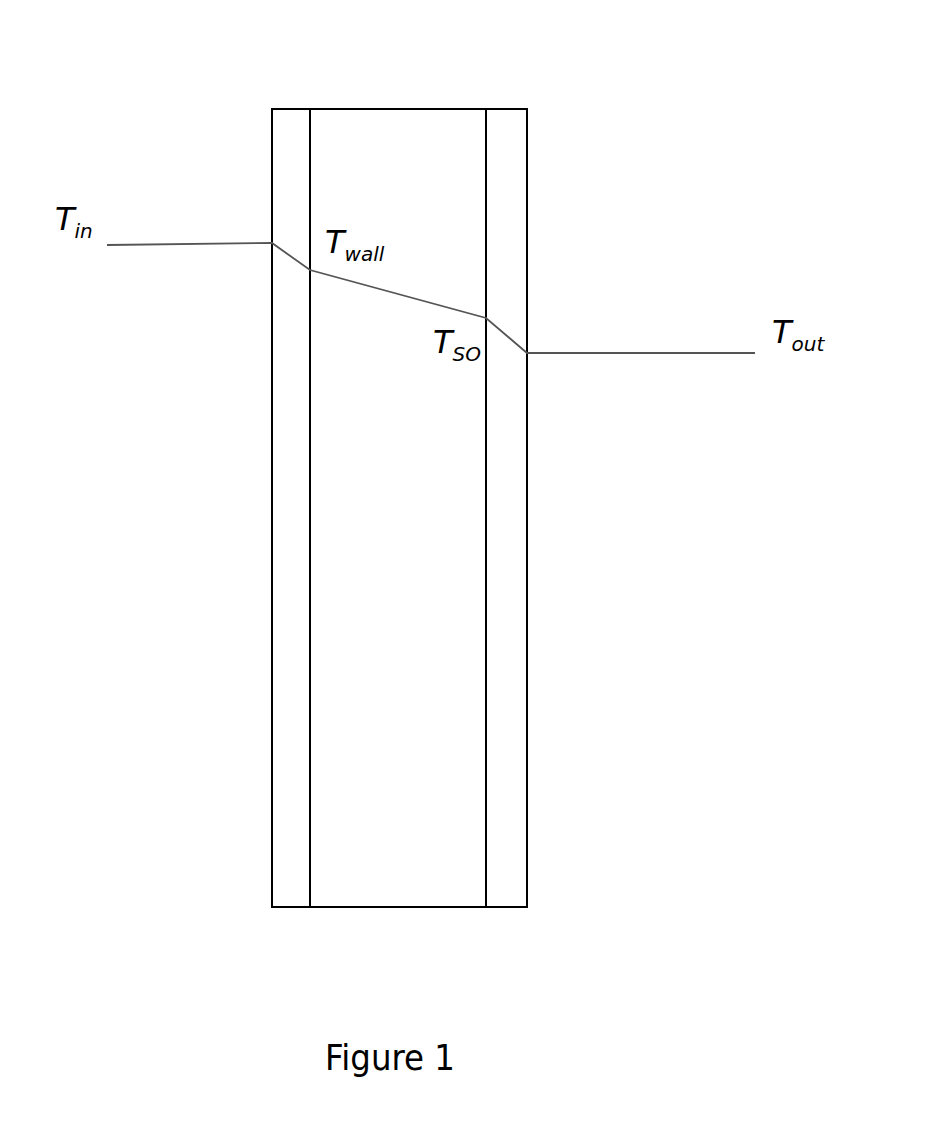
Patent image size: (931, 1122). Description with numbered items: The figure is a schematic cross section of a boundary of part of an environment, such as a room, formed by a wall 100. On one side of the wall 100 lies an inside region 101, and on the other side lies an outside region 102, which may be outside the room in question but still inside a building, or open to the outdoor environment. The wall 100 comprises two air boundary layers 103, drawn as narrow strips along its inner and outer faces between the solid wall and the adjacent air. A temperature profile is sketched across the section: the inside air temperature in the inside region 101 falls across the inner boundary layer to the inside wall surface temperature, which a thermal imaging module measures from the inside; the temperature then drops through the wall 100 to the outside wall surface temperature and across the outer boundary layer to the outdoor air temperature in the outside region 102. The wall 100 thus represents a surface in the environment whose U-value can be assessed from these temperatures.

The wall 100 is at (422, 813).
The inside region 101 is at (108, 437).
The outside region 102 is at (718, 462).
The air boundary layers 103 is at (500, 106).